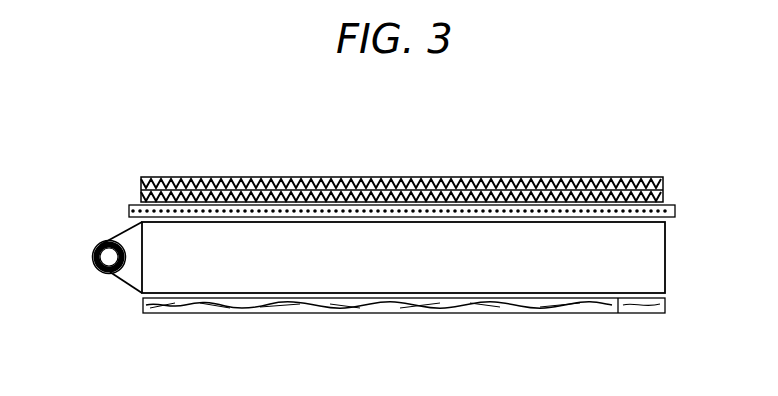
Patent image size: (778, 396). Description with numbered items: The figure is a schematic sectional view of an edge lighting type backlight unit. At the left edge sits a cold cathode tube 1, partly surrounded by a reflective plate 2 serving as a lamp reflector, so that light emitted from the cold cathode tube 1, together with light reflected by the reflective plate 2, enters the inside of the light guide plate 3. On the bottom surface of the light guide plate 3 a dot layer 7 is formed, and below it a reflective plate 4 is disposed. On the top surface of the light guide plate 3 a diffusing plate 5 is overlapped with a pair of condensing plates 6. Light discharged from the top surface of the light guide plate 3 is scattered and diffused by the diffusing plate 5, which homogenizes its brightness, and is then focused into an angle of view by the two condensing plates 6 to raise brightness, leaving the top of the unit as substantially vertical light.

The cold cathode tube 1 is at (92, 257).
The reflective plate (lamp reflector) 2 is at (123, 290).
The light guide plate 3 is at (278, 282).
The reflective plate 4 is at (495, 302).
The diffusing plate (light diffusing film) 5 is at (676, 210).
The condensing plates (prism sheet) 6 is at (338, 199).
The dot layer 7 is at (621, 302).